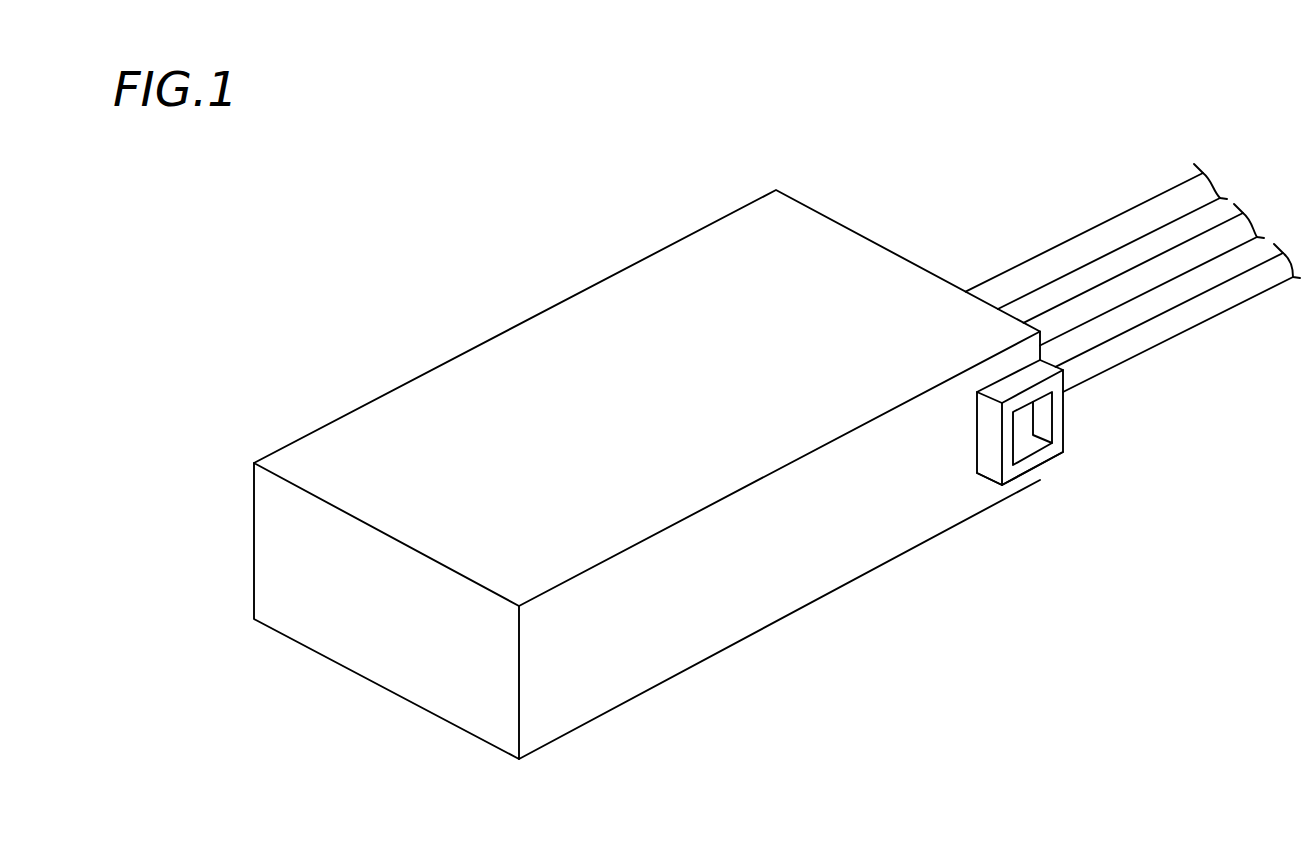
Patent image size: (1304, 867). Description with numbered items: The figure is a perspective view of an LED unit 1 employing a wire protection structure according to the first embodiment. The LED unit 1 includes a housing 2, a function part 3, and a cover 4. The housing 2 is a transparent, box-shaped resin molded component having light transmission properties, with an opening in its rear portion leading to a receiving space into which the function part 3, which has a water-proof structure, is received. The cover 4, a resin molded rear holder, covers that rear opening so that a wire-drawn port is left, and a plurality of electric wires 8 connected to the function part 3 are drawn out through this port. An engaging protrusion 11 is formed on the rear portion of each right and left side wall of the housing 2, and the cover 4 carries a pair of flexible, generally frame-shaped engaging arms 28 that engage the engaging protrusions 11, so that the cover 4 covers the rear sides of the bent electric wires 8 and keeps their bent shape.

The LED unit 1 is at (394, 244).
The housing 2 is at (398, 420).
The function part 3 is at (627, 353).
The cover 4 is at (1057, 382).
The electric wires 8 is at (1047, 268).
The engaging protrusion 11 is at (1020, 430).
The engaging arms 28 is at (1008, 472).